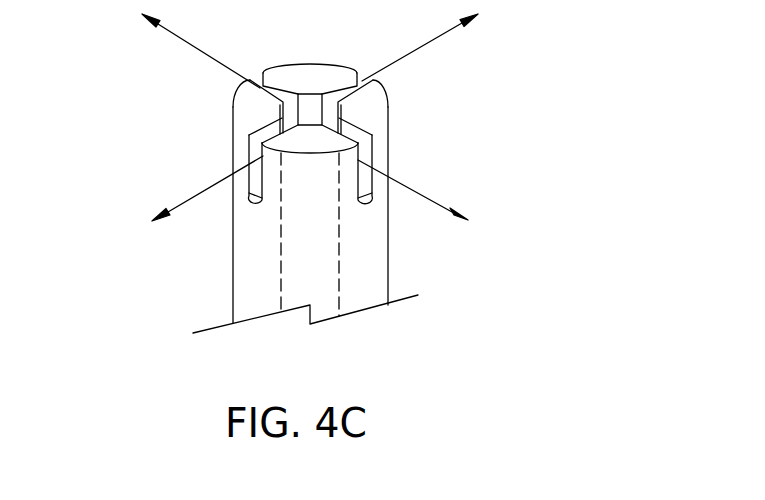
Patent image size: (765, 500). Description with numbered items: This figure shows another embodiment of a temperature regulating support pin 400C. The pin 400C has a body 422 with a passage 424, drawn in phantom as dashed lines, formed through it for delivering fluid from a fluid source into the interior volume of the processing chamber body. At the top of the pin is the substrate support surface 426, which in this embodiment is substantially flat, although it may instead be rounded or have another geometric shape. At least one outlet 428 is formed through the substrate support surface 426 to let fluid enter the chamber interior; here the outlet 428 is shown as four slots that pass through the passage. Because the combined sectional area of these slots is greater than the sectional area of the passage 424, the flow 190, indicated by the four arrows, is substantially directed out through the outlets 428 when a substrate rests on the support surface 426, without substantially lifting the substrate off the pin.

The support pin 400C is at (490, 120).
The body 422 is at (233, 274).
The passage 424 is at (339, 283).
The substrate support surface 426 is at (315, 70).
The outlet 428 is at (252, 151).
The flow 190 is at (196, 48).